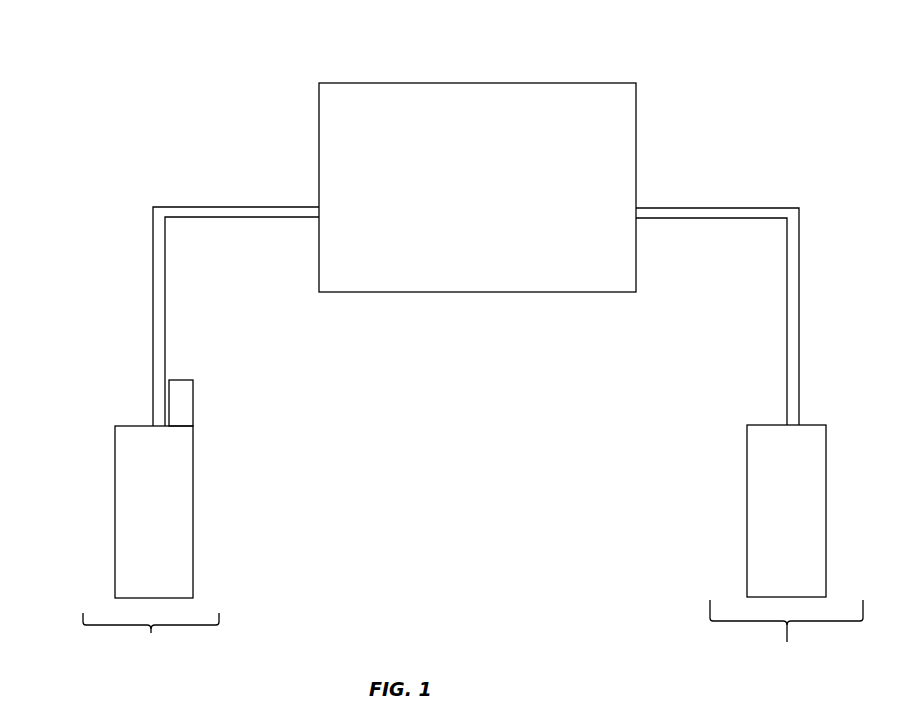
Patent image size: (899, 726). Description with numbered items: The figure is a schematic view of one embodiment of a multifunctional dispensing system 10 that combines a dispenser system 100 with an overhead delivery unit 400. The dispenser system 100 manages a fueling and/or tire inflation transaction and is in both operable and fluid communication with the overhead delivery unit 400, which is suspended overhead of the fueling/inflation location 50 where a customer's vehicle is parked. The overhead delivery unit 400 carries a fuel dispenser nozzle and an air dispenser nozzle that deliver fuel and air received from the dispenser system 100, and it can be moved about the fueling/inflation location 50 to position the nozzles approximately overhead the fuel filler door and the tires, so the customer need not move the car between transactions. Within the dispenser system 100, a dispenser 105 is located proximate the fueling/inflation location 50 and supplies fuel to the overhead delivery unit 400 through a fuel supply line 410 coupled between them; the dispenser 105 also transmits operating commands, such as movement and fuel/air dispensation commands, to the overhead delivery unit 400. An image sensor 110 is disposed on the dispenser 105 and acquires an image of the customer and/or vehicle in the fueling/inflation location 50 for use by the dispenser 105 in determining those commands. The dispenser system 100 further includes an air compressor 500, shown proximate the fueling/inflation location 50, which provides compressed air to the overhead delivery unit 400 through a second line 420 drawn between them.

The multifunctional dispensing system 10 is at (75, 160).
The fueling/inflation location 50 is at (487, 534).
The dispenser system 100 is at (473, 636).
The dispenser 105 is at (169, 523).
The image sensor 110 is at (194, 386).
The overhead delivery unit 400 is at (477, 187).
The fuel supply line 410 is at (153, 257).
The second conduit 420 is at (800, 250).
The air compressor 500 is at (801, 520).